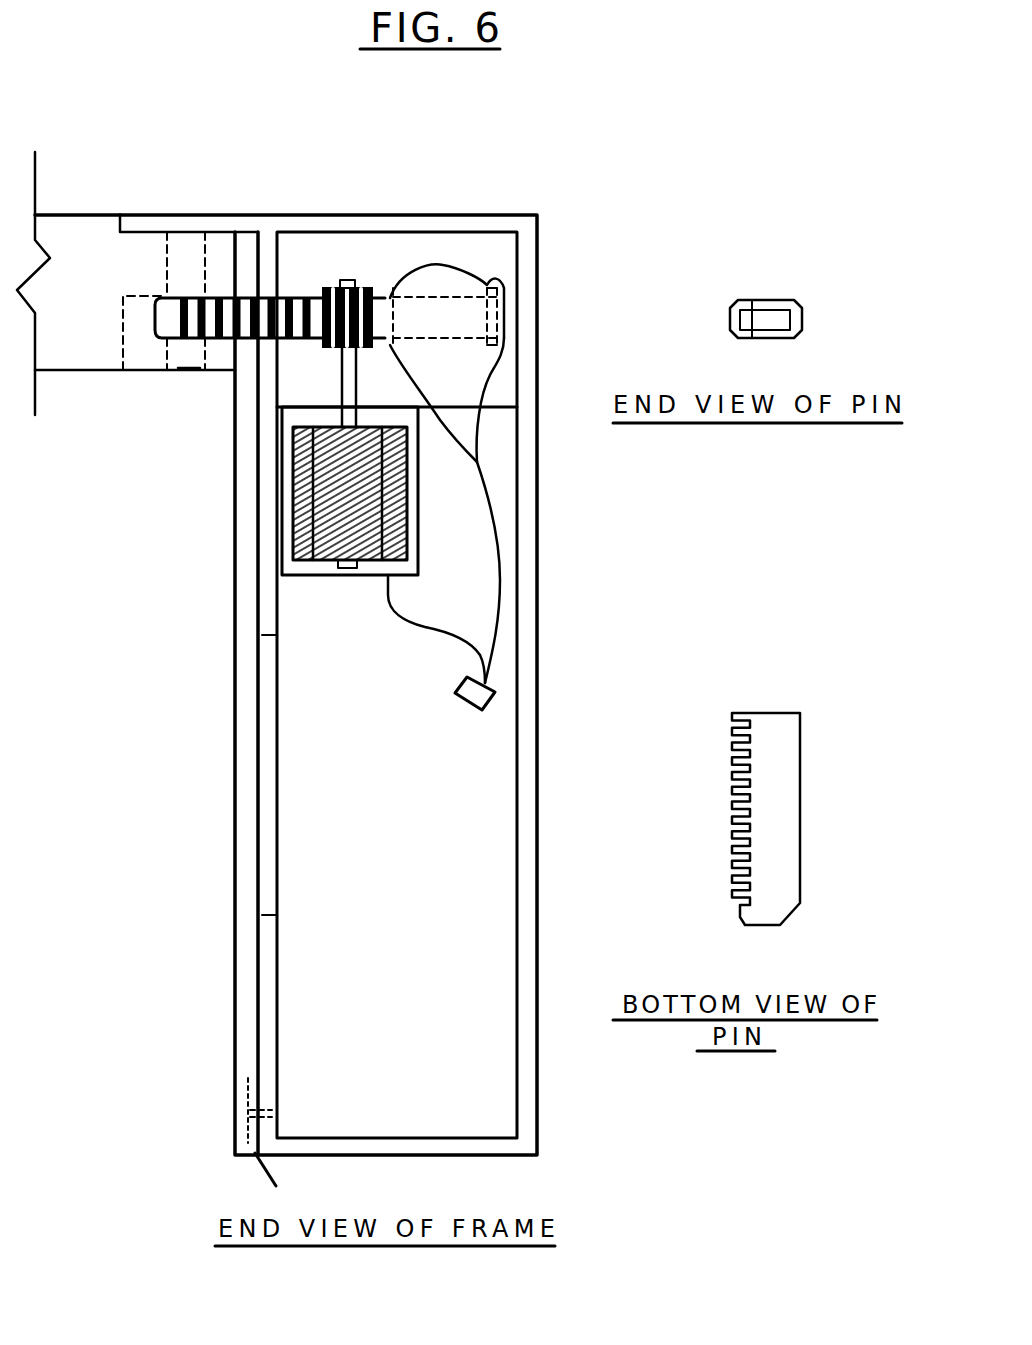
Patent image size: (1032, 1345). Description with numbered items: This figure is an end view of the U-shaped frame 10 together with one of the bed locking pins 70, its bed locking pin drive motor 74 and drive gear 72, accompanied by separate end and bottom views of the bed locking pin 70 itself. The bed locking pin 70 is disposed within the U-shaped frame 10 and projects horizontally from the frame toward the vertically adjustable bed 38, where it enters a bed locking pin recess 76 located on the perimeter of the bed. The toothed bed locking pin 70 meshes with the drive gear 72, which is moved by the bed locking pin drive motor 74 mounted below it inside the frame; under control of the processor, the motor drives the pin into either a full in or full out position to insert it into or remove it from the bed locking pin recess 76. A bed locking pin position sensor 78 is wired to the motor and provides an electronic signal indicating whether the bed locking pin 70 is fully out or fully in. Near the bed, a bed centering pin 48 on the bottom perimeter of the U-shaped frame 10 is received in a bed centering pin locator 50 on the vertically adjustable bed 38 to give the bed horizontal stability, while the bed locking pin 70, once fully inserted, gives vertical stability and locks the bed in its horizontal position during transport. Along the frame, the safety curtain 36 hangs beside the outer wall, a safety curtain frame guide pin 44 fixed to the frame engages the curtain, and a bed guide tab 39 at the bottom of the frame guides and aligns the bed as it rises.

The U-shaped frame 10 is at (548, 712).
The safety curtain 36 is at (226, 684).
The vertically adjustable bed 38 is at (75, 203).
The bed guide tab 39 is at (258, 1179).
The safety curtain frame guide pin 44 is at (229, 1116).
The bed centering pin 48 is at (193, 380).
The bed centering pin locator 50 is at (214, 378).
The bed locking pin 70 is at (301, 282).
The drive gear 72 is at (373, 270).
The bed locking pin drive motor 74 is at (416, 522).
The bed locking pin recess 76 is at (106, 344).
The bed locking pin position sensor 78 is at (474, 311).